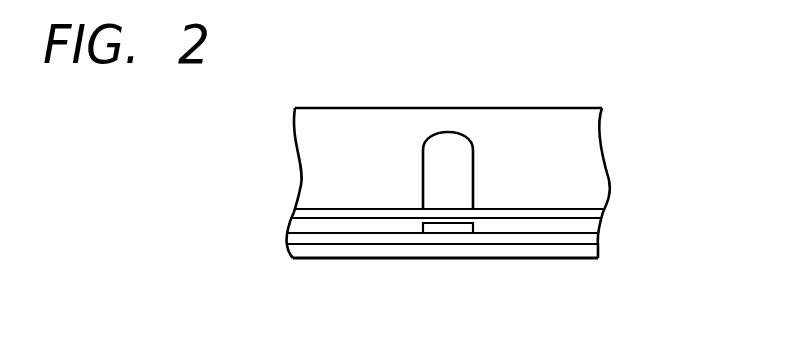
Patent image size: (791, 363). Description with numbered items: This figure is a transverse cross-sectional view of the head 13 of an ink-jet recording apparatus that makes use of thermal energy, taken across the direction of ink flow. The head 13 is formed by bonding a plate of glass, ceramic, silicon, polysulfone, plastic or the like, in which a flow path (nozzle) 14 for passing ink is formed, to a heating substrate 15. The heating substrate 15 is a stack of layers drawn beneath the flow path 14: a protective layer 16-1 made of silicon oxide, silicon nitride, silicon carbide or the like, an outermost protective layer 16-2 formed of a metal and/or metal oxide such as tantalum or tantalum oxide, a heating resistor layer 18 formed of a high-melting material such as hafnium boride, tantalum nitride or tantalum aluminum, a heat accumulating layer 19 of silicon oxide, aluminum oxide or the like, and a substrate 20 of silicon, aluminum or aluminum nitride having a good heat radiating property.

The head 13 is at (348, 108).
The flow path (nozzle) 14 is at (448, 131).
The heating substrate 15 is at (422, 252).
The protective layer 16-1 is at (294, 223).
The outermost protective layer 16-2 is at (372, 212).
The heating resistor layer 18 is at (450, 233).
The heat accumulating layer 19 is at (497, 243).
The substrate 20 is at (552, 252).